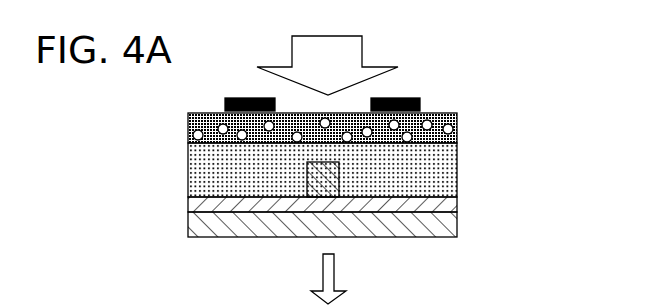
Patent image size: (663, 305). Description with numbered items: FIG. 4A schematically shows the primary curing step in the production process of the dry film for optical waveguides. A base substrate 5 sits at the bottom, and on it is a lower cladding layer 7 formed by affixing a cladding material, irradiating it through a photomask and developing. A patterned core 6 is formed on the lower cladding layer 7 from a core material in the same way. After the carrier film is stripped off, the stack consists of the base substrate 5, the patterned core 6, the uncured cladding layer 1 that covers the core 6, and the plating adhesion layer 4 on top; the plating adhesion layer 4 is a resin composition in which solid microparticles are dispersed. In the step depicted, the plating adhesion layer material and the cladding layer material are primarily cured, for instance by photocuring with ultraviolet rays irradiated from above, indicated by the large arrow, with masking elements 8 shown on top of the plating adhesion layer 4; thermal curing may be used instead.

The uncured cladding layer 1 is at (457, 160).
The plating adhesion layer 4 is at (457, 130).
The base substrate 5 is at (457, 222).
The core 6 is at (307, 183).
The lower cladding layer 7 is at (457, 205).
The electrodes 8 is at (420, 106).